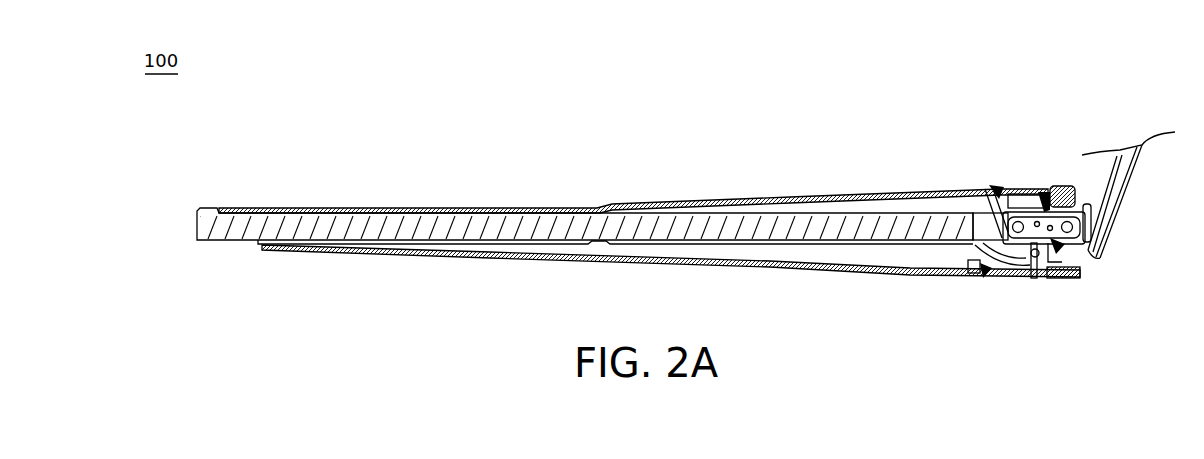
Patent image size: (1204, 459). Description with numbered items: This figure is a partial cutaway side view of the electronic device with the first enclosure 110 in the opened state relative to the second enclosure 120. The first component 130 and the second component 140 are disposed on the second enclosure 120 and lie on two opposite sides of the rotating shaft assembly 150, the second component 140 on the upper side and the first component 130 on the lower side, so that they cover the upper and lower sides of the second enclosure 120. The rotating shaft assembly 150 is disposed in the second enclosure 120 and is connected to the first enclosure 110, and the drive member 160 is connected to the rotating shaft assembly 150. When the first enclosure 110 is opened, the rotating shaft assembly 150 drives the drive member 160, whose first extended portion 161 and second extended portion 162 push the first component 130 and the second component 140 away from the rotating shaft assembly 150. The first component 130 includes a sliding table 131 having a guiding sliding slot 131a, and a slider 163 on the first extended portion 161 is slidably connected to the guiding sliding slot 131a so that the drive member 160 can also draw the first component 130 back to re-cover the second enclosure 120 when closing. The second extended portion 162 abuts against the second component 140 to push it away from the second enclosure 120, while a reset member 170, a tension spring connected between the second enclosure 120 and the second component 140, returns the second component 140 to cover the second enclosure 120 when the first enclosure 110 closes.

The first enclosure 110 is at (1135, 165).
The second enclosure 120 is at (289, 207).
The first component 130 is at (772, 268).
The sliding table 131 is at (1022, 280).
The guiding sliding slot 131a is at (983, 275).
The second component 140 is at (772, 196).
The rotating shaft assembly 150 is at (1085, 256).
The drive member 160 is at (992, 188).
The first extended portion 161 is at (988, 190).
The second extended portion 162 is at (1014, 192).
The slider 163 is at (1042, 278).
The reset member 170 is at (1064, 187).